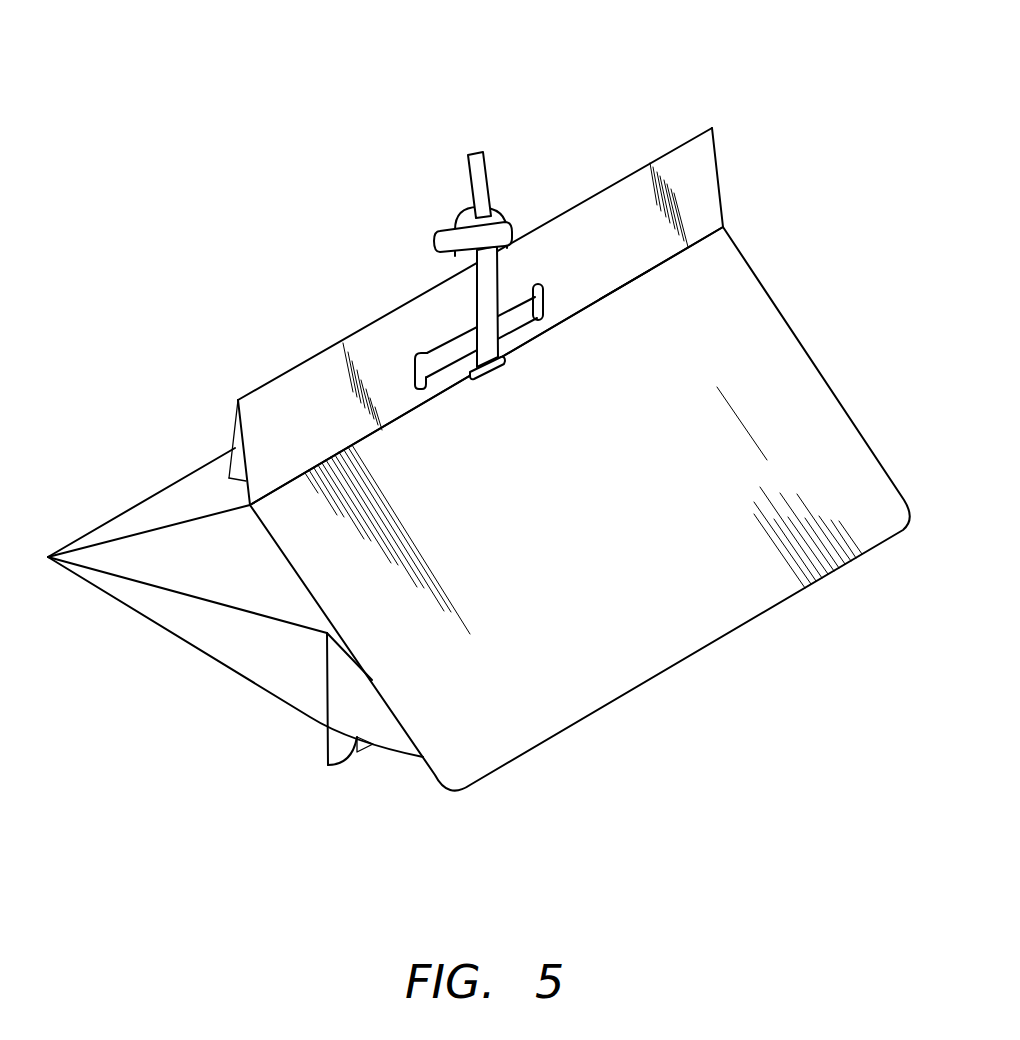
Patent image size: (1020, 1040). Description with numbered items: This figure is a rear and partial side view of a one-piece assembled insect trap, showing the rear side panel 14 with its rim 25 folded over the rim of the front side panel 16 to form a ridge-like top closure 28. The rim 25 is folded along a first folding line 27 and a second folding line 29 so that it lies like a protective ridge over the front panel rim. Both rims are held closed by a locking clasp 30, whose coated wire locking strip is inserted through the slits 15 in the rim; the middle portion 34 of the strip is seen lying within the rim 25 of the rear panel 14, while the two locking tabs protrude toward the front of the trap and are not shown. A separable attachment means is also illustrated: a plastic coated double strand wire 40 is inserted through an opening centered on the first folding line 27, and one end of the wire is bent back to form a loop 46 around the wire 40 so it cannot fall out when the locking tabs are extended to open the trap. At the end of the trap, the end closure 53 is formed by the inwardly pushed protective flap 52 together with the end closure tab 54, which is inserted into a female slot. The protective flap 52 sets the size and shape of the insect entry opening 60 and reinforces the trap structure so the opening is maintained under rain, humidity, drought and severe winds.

The rear side panel 14 is at (740, 570).
The slits 15 is at (413, 362).
The front side panel 16 is at (163, 502).
The rim of the rear side panel 25 is at (714, 136).
The first folding line 27 is at (624, 285).
The top closure 28 is at (723, 193).
The second folding line 29 is at (681, 142).
The locking clasp 30 is at (325, 295).
The middle portion 34 is at (447, 350).
The plastic coated double strand wire 40 is at (490, 175).
The loop 46 is at (510, 217).
The protective flap 52 is at (280, 678).
The end closure 53 is at (180, 687).
The end closure tab 54 is at (342, 763).
The insect entry opening 60 is at (190, 567).